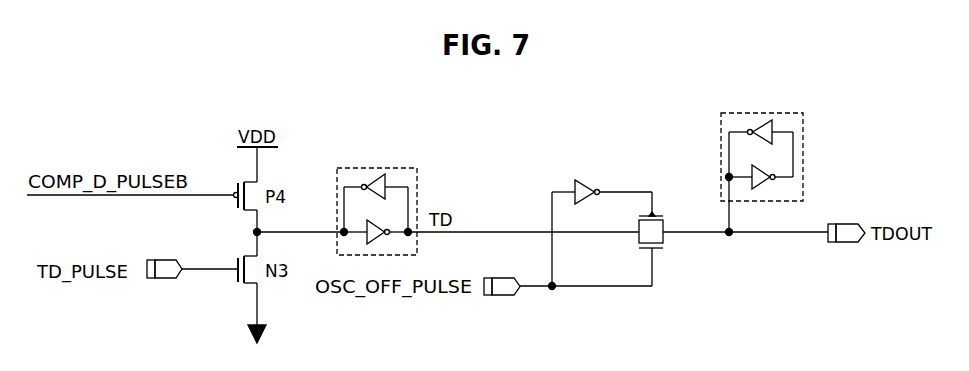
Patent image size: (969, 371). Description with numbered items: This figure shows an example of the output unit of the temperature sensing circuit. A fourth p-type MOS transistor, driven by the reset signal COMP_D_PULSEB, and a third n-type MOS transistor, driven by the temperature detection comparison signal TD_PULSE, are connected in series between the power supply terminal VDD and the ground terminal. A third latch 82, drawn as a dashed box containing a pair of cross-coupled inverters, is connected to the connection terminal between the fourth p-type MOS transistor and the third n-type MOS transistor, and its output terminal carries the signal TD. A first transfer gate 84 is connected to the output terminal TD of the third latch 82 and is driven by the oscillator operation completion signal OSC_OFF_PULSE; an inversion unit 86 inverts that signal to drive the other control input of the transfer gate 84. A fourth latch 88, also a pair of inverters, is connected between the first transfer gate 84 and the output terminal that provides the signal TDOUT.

The third latch 82 is at (417, 168).
The first transfer gate 84 is at (665, 248).
The inversion unit 86 is at (589, 186).
The fourth latch 88 is at (803, 143).